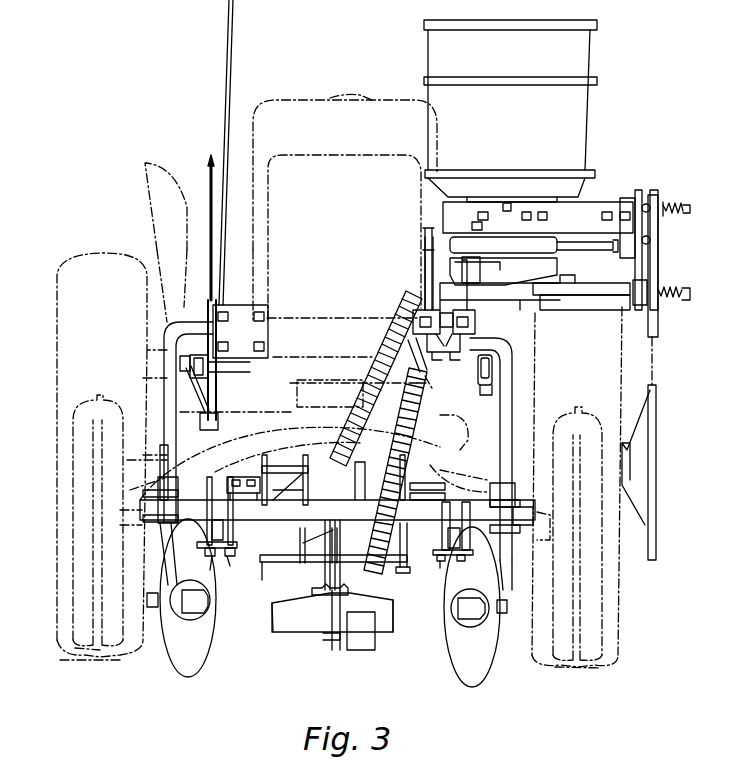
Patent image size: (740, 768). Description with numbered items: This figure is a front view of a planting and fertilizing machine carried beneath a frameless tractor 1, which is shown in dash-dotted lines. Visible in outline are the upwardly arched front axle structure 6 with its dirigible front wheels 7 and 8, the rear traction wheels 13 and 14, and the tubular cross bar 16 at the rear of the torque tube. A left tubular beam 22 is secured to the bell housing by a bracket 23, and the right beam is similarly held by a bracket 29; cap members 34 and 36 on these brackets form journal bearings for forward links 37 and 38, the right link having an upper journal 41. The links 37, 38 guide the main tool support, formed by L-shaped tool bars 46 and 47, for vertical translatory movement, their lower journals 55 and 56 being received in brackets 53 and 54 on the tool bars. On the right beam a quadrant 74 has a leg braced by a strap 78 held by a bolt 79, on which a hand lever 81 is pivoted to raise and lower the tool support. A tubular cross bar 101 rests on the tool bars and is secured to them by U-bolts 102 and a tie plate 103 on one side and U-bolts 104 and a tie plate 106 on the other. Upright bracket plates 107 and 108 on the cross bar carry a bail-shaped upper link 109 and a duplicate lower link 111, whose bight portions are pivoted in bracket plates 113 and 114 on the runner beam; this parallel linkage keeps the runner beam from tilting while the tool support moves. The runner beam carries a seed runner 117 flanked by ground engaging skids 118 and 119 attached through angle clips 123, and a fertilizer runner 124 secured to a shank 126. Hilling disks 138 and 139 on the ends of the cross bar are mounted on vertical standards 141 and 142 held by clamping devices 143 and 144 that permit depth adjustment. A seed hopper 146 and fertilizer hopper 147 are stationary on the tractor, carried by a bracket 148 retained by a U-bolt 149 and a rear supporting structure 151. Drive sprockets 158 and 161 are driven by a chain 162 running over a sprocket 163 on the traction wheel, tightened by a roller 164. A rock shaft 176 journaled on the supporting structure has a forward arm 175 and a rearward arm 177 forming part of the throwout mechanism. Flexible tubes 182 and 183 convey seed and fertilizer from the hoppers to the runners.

The tractor 1 is at (302, 101).
The front axle structure 6 is at (276, 418).
The front wheel 7 is at (588, 660).
The front wheel 8 is at (80, 640).
The rear traction wheel 13 is at (612, 585).
The rear traction wheel 14 is at (57, 318).
The cross bar 16 is at (430, 382).
The tubular beam 22 is at (478, 396).
The bracket 23 is at (448, 312).
The bracket 29 is at (243, 306).
The cap member 34 is at (410, 340).
The cap member 36 is at (213, 372).
The link 37 is at (511, 402).
The link 38 is at (150, 375).
The upper journal 41 is at (200, 330).
The L-shaped tool bar 46 is at (447, 531).
The L-shaped tool bar 47 is at (225, 531).
The bracket 53 is at (242, 476).
The bracket 54 is at (436, 470).
The lower journal 55 is at (488, 488).
The lower journal 56 is at (170, 472).
The quadrant 74 is at (209, 286).
The strap 78 is at (200, 422).
The bolt 79 is at (216, 428).
The hand lever 81 is at (226, 63).
The cross bar 101 is at (298, 520).
The U-bolt 102 is at (446, 561).
The tie plate 103 is at (434, 549).
The U-bolt 104 is at (212, 558).
The tie plate 106 is at (241, 558).
The bracket plate 107 is at (403, 573).
The bracket plate 108 is at (265, 575).
The upper link 109 is at (297, 467).
The link 111 is at (297, 556).
The bracket plate 113 is at (378, 464).
The bracket plate 114 is at (302, 489).
The runner 117 is at (335, 623).
The skid 118 is at (394, 624).
The skid 119 is at (272, 624).
The angle clip 123 is at (322, 589).
The runner 124 is at (340, 650).
The shank 126 is at (372, 645).
The hilling disk 138 is at (468, 670).
The hilling disk 139 is at (198, 661).
The vertical standard 141 is at (502, 584).
The vertical standard 142 is at (173, 555).
The clamping device 143 is at (505, 568).
The clamping device 144 is at (158, 525).
The seed hopper 146 is at (594, 61).
The fertilizer hopper 147 is at (588, 141).
The bracket 148 is at (525, 338).
The U-bolt 149 is at (478, 372).
The supporting structure 151 is at (500, 284).
The drive sprocket 158 is at (658, 200).
The drive sprocket 161 is at (660, 276).
The chain 162 is at (656, 368).
The drive sprocket 163 is at (657, 446).
The roller 164 is at (658, 235).
The arm 175 is at (423, 229).
The rock shaft 176 is at (582, 246).
The arm 177 is at (560, 268).
The flexible tube 182 is at (410, 308).
The flexible tube 183 is at (412, 427).